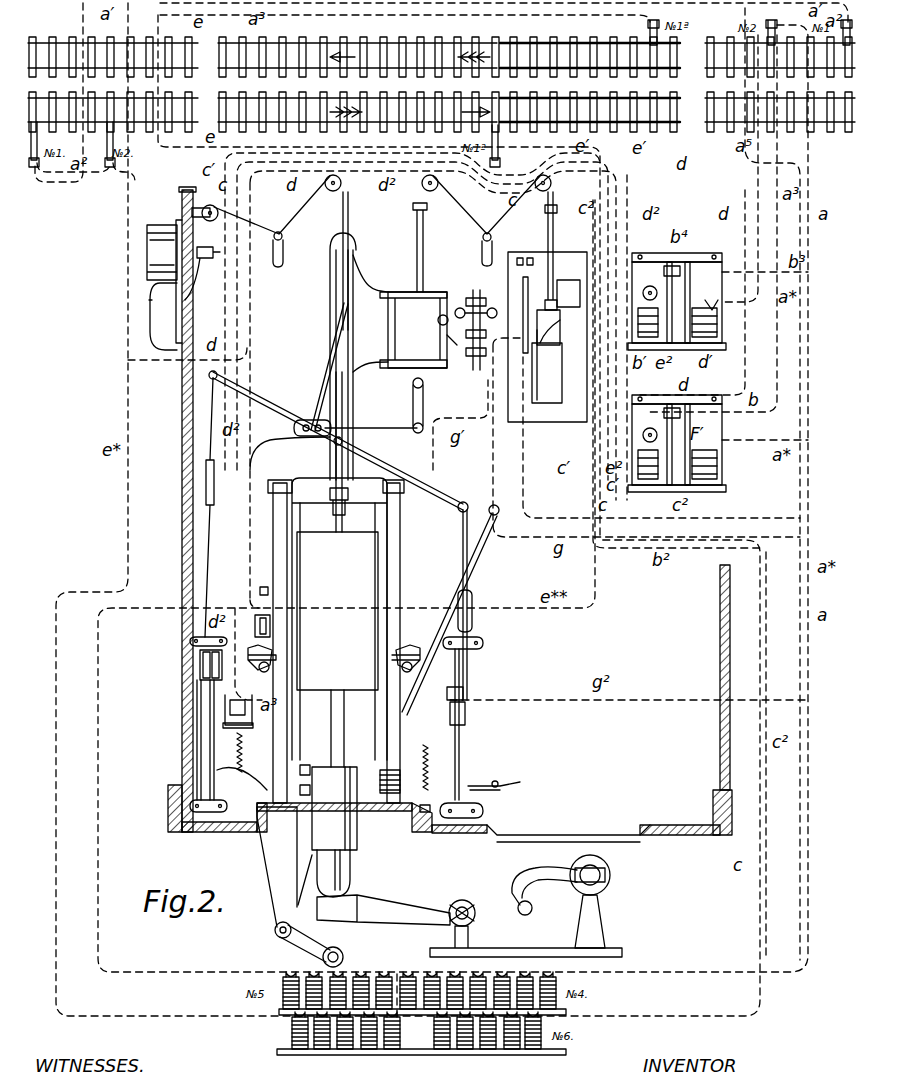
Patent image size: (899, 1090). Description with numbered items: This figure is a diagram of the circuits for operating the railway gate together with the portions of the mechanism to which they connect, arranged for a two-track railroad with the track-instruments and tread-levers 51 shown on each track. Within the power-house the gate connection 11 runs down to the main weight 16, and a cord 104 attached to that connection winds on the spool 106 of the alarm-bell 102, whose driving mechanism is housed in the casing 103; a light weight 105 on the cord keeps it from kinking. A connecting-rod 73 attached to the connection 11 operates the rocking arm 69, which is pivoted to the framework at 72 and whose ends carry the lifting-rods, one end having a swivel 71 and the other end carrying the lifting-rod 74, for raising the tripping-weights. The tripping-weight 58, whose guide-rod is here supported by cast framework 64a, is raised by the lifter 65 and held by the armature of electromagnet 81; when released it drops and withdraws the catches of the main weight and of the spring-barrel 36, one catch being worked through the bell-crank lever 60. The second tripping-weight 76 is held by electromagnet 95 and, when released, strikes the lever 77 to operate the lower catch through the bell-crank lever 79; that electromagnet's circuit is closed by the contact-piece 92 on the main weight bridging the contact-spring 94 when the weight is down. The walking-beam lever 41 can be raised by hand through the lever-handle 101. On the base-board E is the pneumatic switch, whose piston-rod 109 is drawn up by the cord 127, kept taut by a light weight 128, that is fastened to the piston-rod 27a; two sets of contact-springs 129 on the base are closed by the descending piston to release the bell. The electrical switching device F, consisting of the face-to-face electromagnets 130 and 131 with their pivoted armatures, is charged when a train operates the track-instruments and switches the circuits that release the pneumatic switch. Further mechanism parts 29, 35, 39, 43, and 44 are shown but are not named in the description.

The connection 11 is at (349, 219).
The main weight 16 is at (337, 631).
The piston-rod 27a is at (417, 243).
The valve chest 29 is at (438, 330).
The lower cylinder 35 is at (334, 808).
The spring-barrel 36 is at (324, 877).
The piston rod 39 is at (332, 712).
The walking-beam lever 41 is at (410, 900).
The curved arm 43 is at (535, 872).
The wheel 44 is at (612, 875).
The tread-levers 51 is at (566, 43).
The tripping-weight 58 is at (465, 692).
The bell-crank lever 60 is at (398, 657).
The cast framework 64a is at (414, 764).
The lifter 65 is at (470, 790).
The rocking arm 69 is at (386, 466).
The swivel 71 is at (472, 618).
The pivot 72 is at (352, 440).
The connecting-rod 73 is at (328, 393).
The lifting-rod 74 is at (205, 530).
The tripping-weight 76 is at (200, 662).
The lever 77 is at (258, 790).
The bell-crank lever 79 is at (268, 657).
The electromagnet 81 is at (467, 712).
The movable contact-piece 92 is at (260, 590).
The contact-spring 94 is at (270, 627).
The electromagnet 95 is at (228, 705).
The lever-handle 101 is at (484, 548).
The alarm-bell 102 is at (173, 325).
The casing 103 is at (178, 245).
The cord 104 is at (295, 224).
The light weight 105 is at (278, 268).
The spool 106 is at (205, 262).
The piston-rod 109 is at (553, 230).
The cord 127 is at (462, 214).
The light weight 128 is at (481, 256).
The sets of contact-springs 129 is at (523, 290).
The electromagnet 130 is at (648, 393).
The electromagnet 131 is at (704, 393).
The board or base E is at (547, 337).
The electrical switching device F is at (677, 301).